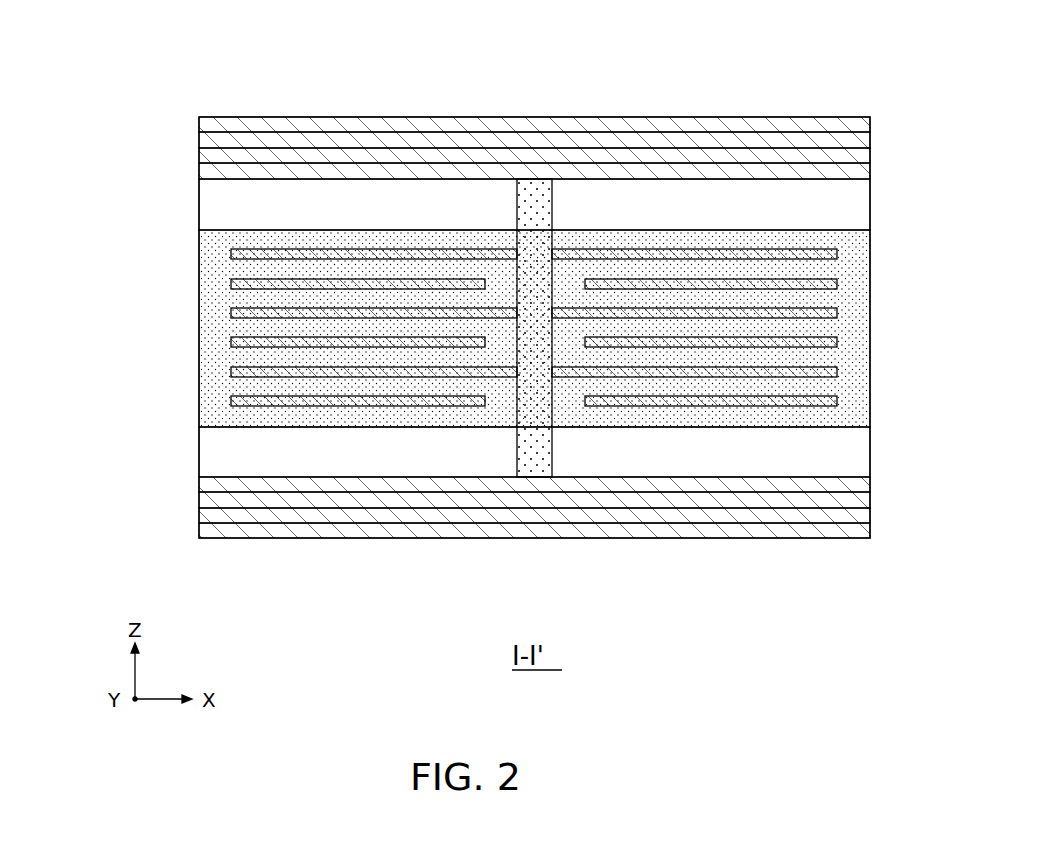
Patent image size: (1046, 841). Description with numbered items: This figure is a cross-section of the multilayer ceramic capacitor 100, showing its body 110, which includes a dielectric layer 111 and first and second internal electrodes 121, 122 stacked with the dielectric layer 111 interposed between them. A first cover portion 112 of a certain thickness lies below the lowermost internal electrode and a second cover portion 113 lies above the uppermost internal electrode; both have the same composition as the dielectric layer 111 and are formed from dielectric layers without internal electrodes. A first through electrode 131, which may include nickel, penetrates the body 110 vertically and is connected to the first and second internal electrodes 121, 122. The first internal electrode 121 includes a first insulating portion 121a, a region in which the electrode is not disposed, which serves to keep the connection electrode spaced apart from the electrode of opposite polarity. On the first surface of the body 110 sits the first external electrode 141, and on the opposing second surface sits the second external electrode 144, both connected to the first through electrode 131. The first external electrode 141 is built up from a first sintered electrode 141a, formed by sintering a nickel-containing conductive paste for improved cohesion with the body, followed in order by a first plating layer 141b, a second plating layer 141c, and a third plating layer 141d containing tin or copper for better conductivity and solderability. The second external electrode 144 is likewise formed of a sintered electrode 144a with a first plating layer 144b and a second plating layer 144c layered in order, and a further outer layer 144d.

The multilayer ceramic capacitor 100 is at (358, 44).
The body 110 is at (576, 376).
The dielectric layer 111 is at (832, 357).
The first cover portion 112 is at (870, 443).
The second cover portion 113 is at (865, 200).
The first internal electrode 121 is at (317, 416).
The first insulating portion 121a is at (500, 400).
The second internal electrode 122 is at (838, 403).
The first through electrode 131 is at (535, 178).
The first external electrode 141 is at (103, 462).
The first sintered electrode 141a is at (199, 485).
The first plating layer 141b is at (199, 500).
The second plating layer 141c is at (199, 528).
The third plating layer 141d is at (240, 540).
The second external electrode 144 is at (103, 80).
The sintered electrode 144a is at (199, 172).
The first plating layer 144b is at (199, 150).
The second plating layer 144c is at (199, 125).
The fourth electrode layer 144d is at (240, 117).